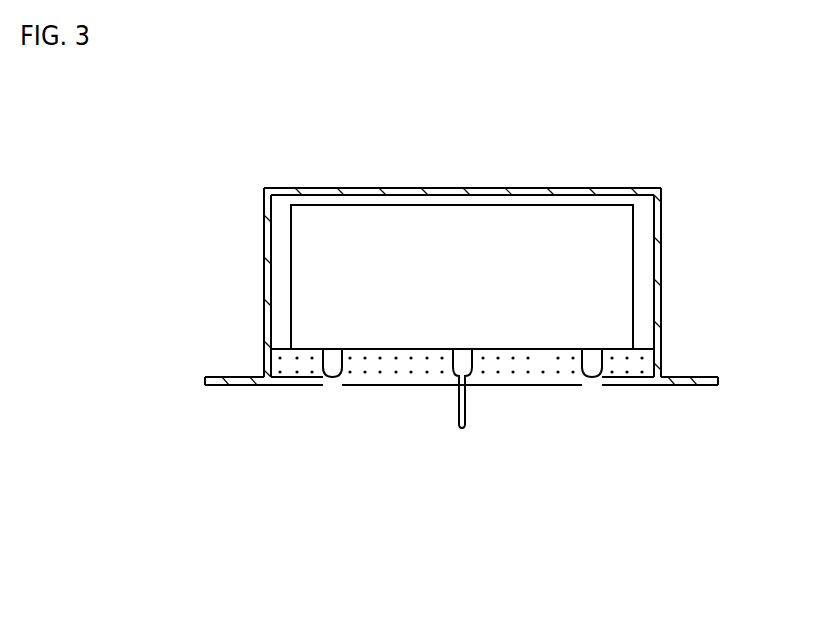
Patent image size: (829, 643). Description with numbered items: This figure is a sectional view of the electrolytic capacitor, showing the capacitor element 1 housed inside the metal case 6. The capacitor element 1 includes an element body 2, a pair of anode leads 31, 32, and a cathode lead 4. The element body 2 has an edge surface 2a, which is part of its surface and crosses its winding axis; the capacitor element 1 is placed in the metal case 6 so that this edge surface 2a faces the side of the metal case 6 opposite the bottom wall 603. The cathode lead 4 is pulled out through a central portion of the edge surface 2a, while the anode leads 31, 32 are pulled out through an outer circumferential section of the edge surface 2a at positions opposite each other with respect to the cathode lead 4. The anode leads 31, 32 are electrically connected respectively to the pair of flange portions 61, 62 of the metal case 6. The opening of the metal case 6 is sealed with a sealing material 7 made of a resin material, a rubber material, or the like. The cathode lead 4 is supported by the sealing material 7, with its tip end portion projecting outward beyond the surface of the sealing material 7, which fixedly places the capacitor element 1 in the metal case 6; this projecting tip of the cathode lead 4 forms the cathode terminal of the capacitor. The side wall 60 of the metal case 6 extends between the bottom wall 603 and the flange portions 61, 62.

The capacitor element 1 is at (502, 313).
The element body 2 is at (594, 218).
The edge surface 2a is at (543, 353).
The cathode lead 4 is at (466, 411).
The metal case 6 is at (464, 237).
The side wall of cover 60 is at (265, 268).
The bottom wall 603 is at (384, 190).
The flange portion 61 is at (222, 386).
The flange portion 62 is at (704, 386).
The anode lead 31 is at (301, 386).
The anode lead 32 is at (618, 386).
The sealing material 7 is at (401, 386).